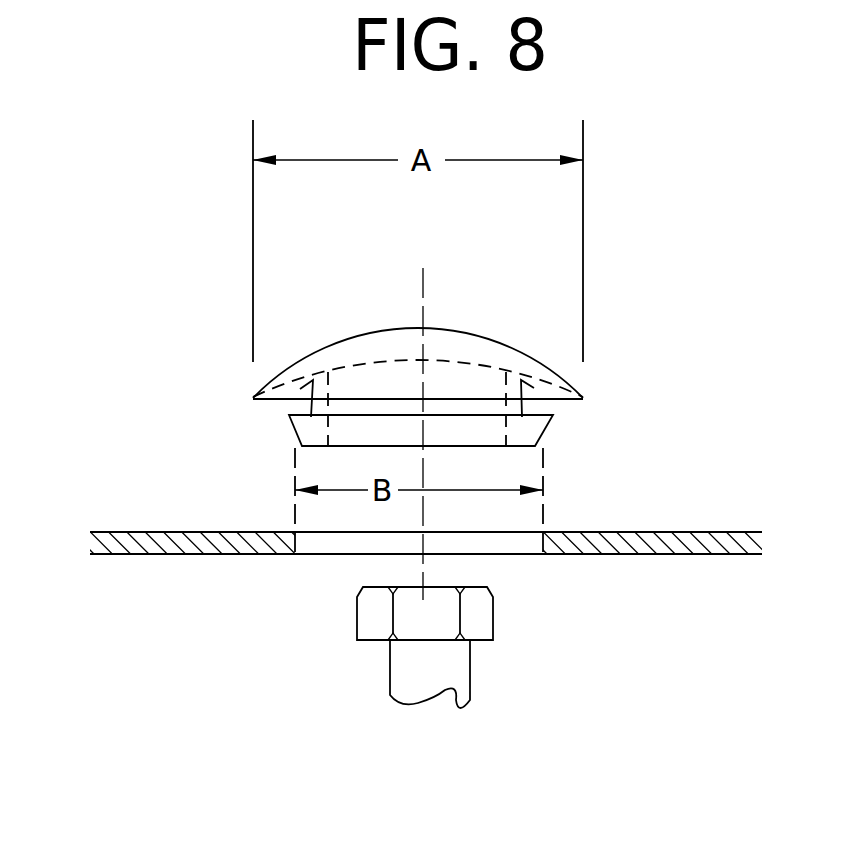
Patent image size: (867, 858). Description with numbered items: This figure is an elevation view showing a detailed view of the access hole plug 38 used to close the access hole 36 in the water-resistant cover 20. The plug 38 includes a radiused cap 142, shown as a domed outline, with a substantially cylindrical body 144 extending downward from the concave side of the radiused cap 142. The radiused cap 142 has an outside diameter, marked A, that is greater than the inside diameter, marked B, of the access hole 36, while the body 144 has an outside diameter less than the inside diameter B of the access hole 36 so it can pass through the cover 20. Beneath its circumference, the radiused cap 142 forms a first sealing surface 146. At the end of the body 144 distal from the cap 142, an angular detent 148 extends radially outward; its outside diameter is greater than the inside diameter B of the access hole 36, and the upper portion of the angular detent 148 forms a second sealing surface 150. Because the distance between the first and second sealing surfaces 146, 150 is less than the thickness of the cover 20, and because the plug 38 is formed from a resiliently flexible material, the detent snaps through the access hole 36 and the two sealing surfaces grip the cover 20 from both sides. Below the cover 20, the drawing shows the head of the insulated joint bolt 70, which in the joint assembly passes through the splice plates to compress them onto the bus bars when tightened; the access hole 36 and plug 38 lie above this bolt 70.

The cover 20 is at (732, 532).
The access hole 36 is at (340, 545).
The access hole plug 38 is at (560, 295).
The joint bolt 70 is at (375, 612).
The radiused cap 142 is at (482, 335).
The body 144 is at (515, 407).
The first sealing surface 146 is at (282, 374).
The angular detent 148 is at (308, 428).
The second sealing surface 150 is at (305, 413).